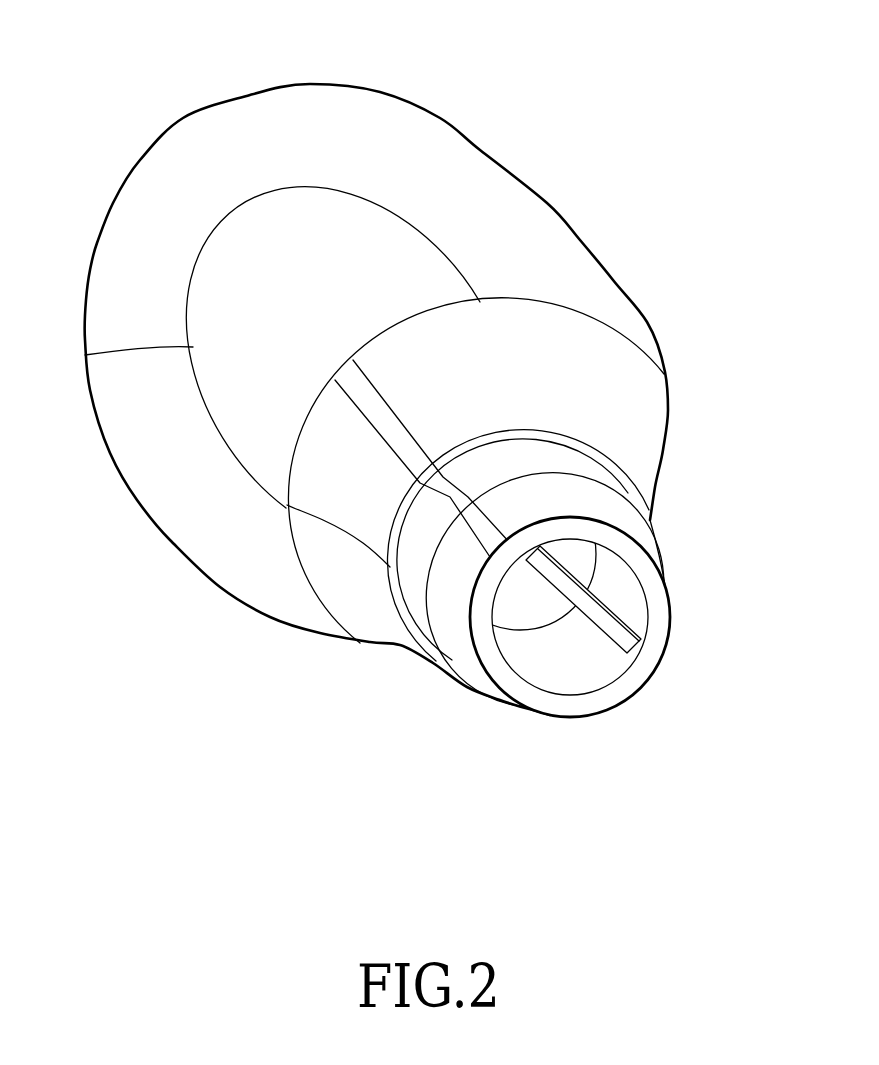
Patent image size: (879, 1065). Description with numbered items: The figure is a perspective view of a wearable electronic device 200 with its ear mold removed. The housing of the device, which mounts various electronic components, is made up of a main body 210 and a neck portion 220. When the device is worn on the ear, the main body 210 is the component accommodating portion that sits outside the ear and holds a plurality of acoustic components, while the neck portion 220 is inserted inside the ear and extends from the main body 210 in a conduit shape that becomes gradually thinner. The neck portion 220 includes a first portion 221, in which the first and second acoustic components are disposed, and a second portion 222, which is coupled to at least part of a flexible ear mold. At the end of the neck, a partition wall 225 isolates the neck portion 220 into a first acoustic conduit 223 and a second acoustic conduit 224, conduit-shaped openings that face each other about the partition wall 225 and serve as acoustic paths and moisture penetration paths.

The wearable electronic device 200 is at (546, 158).
The main body 210 is at (352, 247).
The neck portion 220 is at (678, 375).
The first portion 221 is at (335, 592).
The second portion 222 is at (452, 612).
The first acoustic conduit 223 is at (560, 667).
The second acoustic conduit 224 is at (625, 585).
The partition wall 225 is at (610, 625).